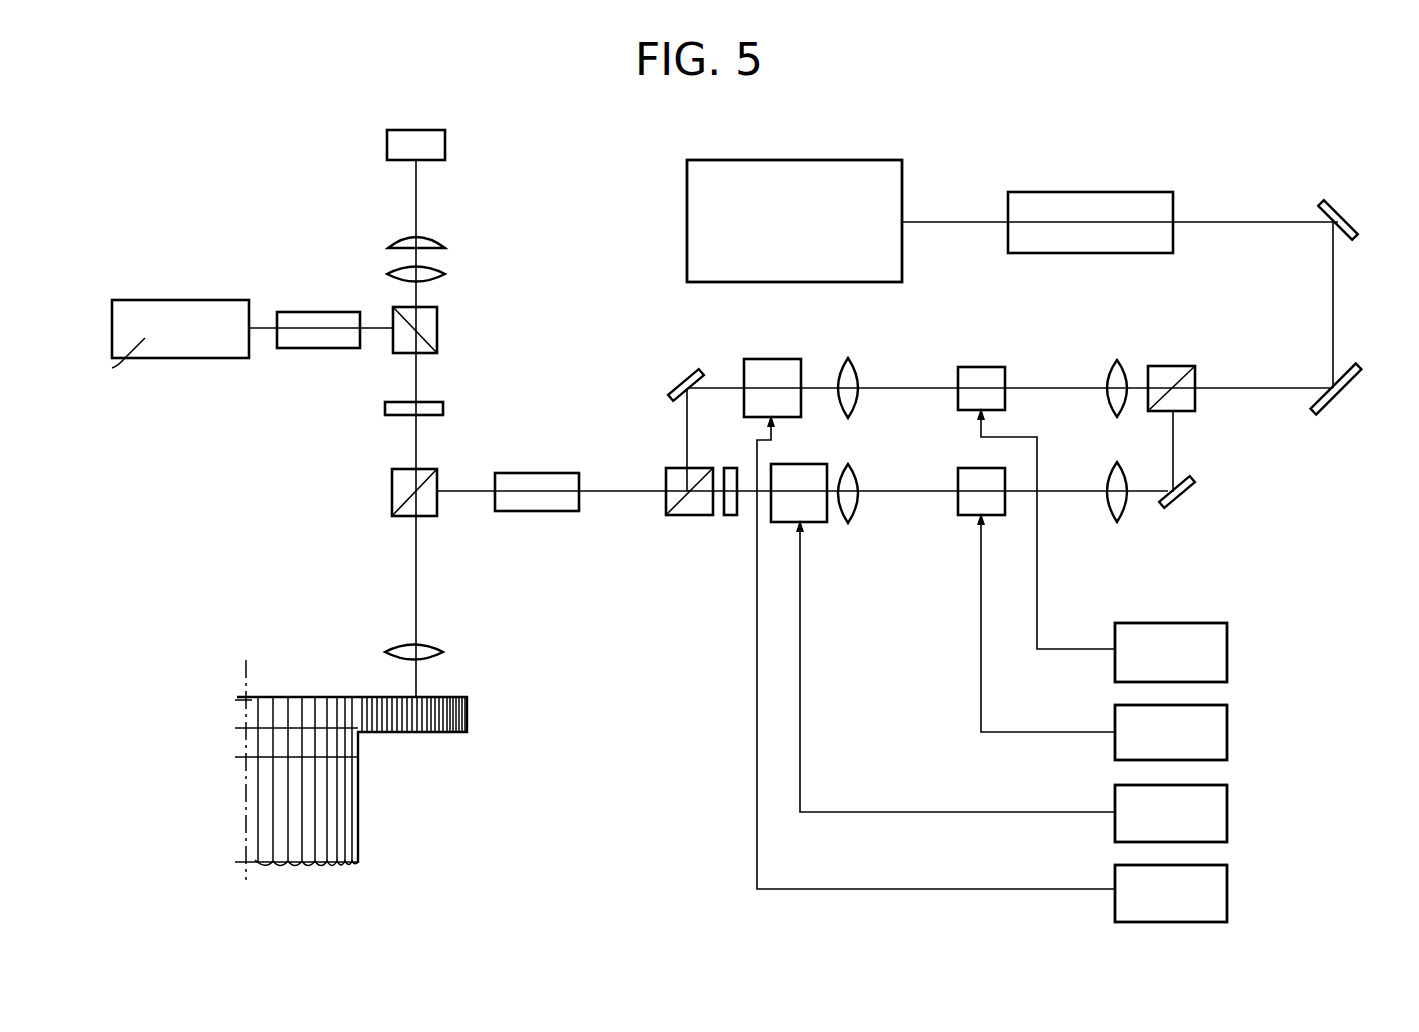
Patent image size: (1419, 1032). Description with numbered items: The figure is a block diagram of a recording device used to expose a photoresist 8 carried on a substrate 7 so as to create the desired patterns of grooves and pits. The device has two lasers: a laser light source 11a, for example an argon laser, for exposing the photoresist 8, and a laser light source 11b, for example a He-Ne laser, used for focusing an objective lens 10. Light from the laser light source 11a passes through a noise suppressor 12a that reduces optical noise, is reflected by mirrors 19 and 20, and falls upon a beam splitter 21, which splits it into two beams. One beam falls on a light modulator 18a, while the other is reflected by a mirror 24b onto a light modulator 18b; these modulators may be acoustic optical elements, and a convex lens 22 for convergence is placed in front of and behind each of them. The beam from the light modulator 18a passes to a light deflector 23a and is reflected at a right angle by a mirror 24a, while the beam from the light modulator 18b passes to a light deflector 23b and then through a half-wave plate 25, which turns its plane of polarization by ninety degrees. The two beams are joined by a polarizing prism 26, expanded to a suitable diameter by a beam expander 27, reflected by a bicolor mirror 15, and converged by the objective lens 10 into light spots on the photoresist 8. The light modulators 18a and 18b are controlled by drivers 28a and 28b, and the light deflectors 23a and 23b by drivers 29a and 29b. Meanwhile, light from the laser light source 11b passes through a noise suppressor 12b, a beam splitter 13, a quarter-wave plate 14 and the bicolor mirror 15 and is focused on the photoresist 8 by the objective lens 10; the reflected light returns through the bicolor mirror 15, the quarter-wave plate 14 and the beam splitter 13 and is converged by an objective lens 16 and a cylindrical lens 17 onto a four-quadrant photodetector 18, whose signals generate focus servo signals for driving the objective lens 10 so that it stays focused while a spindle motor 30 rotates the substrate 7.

The substrate 7 is at (467, 716).
The photoresist 8 is at (468, 697).
The objective lens 10 is at (443, 650).
The laser light source 11a is at (843, 160).
The laser light source 11b is at (188, 298).
The noise suppressor 12a is at (1078, 192).
The noise suppressor 12b is at (310, 312).
The beam splitter 13 is at (440, 325).
The quarter-wave plate 14 is at (445, 406).
The bicolor mirror 15 is at (420, 470).
The objective lens 16 is at (442, 272).
The cylindrical lens 17 is at (440, 240).
The four-quadrant photodetector 18 is at (445, 138).
The light modulator 18a is at (985, 366).
The light modulator 18b is at (965, 515).
The mirror 19 is at (1335, 204).
The mirror 20 is at (1357, 372).
The beam splitter 21 is at (1180, 366).
The convex lens 22 is at (855, 362).
The light deflector 23a is at (770, 359).
The light deflector 23b is at (790, 464).
The mirror 24a is at (690, 372).
The mirror 24b is at (1190, 490).
The half-wave plate 25 is at (727, 516).
The polarizing prism 26 is at (697, 468).
The beam expander 27 is at (543, 473).
The driver 28a is at (1227, 642).
The driver 28b is at (1227, 722).
The driver 29a is at (1227, 878).
The driver 29b is at (1227, 800).
The spindle motor 30 is at (358, 793).